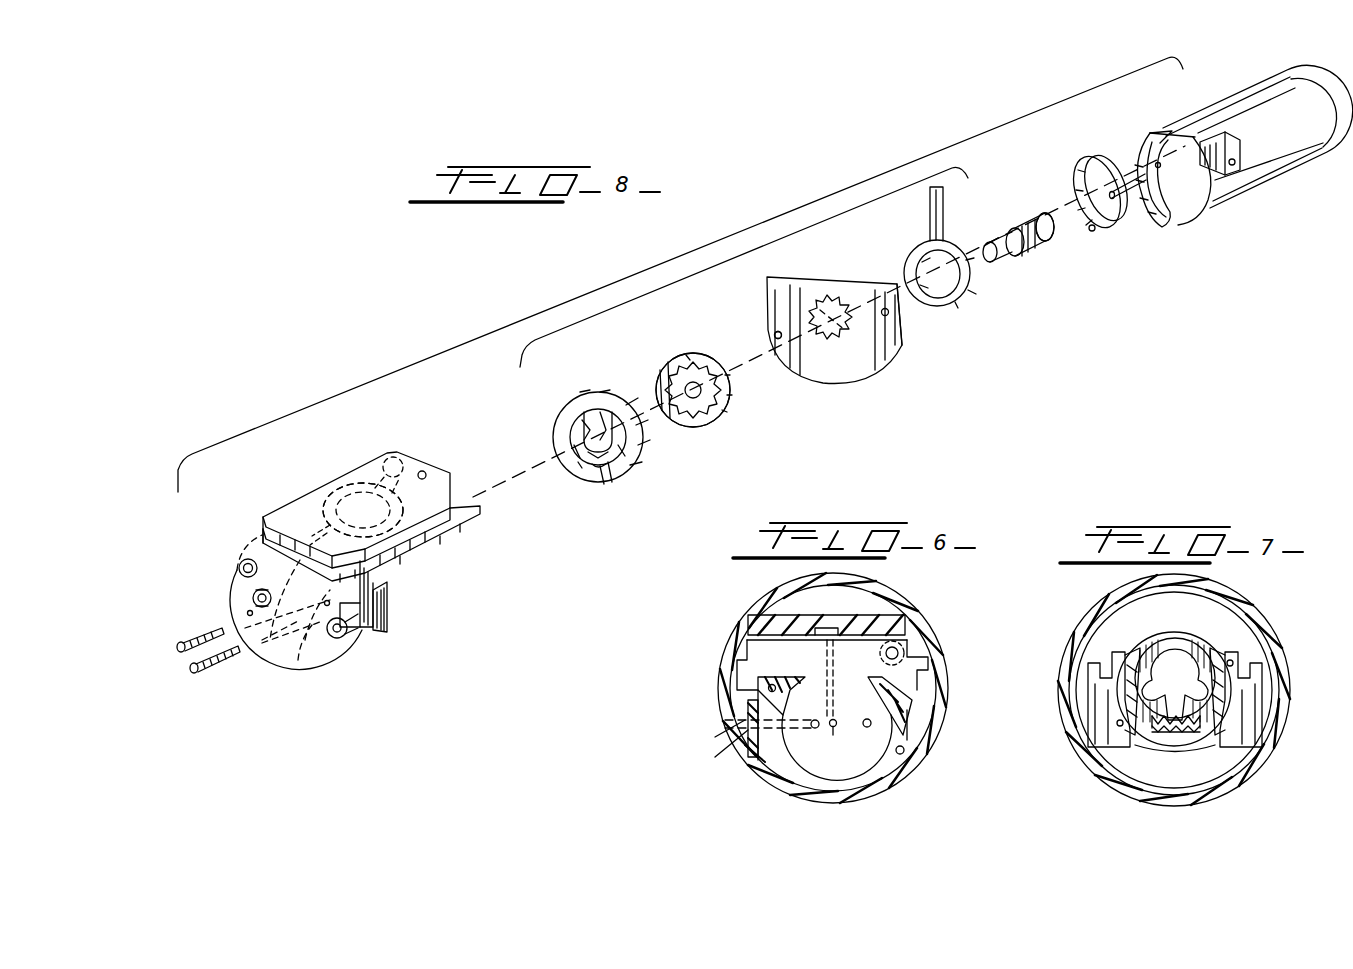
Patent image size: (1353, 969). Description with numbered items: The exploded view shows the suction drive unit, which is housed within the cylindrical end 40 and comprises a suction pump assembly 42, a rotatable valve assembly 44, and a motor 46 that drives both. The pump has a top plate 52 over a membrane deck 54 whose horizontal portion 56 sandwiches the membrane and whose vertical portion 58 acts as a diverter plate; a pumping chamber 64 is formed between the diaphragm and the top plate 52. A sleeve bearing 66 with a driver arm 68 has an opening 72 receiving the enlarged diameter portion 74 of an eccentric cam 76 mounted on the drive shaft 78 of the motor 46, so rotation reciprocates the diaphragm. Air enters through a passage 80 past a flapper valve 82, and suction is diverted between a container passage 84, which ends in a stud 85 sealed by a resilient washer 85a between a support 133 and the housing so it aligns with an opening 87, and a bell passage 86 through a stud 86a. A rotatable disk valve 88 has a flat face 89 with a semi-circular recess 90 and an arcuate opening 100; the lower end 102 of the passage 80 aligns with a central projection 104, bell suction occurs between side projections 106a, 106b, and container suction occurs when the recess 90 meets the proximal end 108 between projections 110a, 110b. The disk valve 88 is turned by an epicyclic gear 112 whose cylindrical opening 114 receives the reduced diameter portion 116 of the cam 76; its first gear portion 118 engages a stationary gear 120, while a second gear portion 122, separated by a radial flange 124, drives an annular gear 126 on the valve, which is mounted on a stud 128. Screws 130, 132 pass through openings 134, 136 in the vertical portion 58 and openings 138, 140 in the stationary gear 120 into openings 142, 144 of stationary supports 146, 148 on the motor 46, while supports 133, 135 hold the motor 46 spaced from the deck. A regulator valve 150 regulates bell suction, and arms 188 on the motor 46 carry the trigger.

In FIG. 6, the cylindrical end 40 is at (765, 583).
In FIG. 7, the cylindrical end 40 is at (1105, 585).
In FIG. 8, the suction pump assembly 42 is at (458, 548).
In FIG. 8, the rotatable valve assembly 44 is at (668, 292).
In FIG. 8, the motor 46 is at (1225, 100).
In FIG. 8, the top plate 52 is at (283, 516).
In FIG. 8, the membrane deck 54 is at (482, 513).
In FIG. 8, the horizontal portion 56 is at (402, 575).
In FIG. 8, the vertical portion 58 is at (307, 664).
In FIG. 8, the pumping chamber 64 is at (340, 492).
In FIG. 8, the sleeve bearing 66 is at (955, 300).
In FIG. 8, the driver arm 68 is at (928, 213).
In FIG. 8, the opening 72 is at (915, 270).
In FIG. 8, the enlarged diameter portion 74 is at (1040, 250).
In FIG. 8, the eccentric cam 76 is at (1030, 218).
In FIG. 8, the drive shaft 78 is at (1118, 188).
In FIG. 8, the passage 80 is at (238, 570).
In FIG. 6, the passage 80 is at (828, 660).
In FIG. 6, the flapper valve 82 is at (860, 625).
In FIG. 8, the passage 84 is at (298, 660).
In FIG. 6, the passage 84 is at (775, 765).
In FIG. 8, the stud 85 is at (340, 640).
In FIG. 6, the stud 85 is at (748, 725).
In FIG. 6, the washer 85a is at (755, 745).
In FIG. 8, the passage 86 is at (250, 598).
In FIG. 6, the passage 86 is at (867, 727).
In FIG. 8, the stud 86a is at (262, 640).
In FIG. 6, the opening 87 is at (745, 720).
In FIG. 8, the rotatable disk valve 88 is at (630, 465).
In FIG. 8, the flat face 89 is at (615, 478).
In FIG. 7, the flat face 89 is at (1160, 755).
In FIG. 8, the semi-circular recess 90 is at (590, 425).
In FIG. 7, the semi-circular recess 90 is at (1180, 655).
In FIG. 8, the arcuate opening 100 is at (600, 470).
In FIG. 7, the arcuate opening 100 is at (1190, 740).
In FIG. 6, the lower end 102 is at (833, 735).
In FIG. 8, the central projection 104 is at (587, 455).
In FIG. 7, the central projection 104 is at (1165, 740).
In FIG. 8, the side projection 106a is at (625, 453).
In FIG. 7, the side projection 106a is at (1230, 735).
In FIG. 8, the side projection 106b is at (578, 452).
In FIG. 7, the side projection 106b is at (1130, 730).
In FIG. 8, the proximal end 108 is at (272, 660).
In FIG. 6, the proximal end 108 is at (815, 728).
In FIG. 8, the side projection 110a is at (603, 420).
In FIG. 7, the side projection 110a is at (1195, 690).
In FIG. 8, the side projection 110b is at (577, 425).
In FIG. 7, the side projection 110b is at (1125, 670).
In FIG. 8, the epicyclic gear 112 is at (735, 405).
In FIG. 8, the cylindrical opening 114 is at (665, 378).
In FIG. 8, the reduced diameter portion 116 is at (1000, 262).
In FIG. 8, the first gear portion 118 is at (745, 376).
In FIG. 8, the stationary gear 120 is at (886, 368).
In FIG. 8, the second gear portion 122 is at (710, 410).
In FIG. 8, the radial flange 124 is at (688, 355).
In FIG. 8, the annular gear 126 is at (580, 465).
In FIG. 8, the stud 128 is at (988, 245).
In FIG. 8, the screw 130 is at (182, 638).
In FIG. 8, the screw 132 is at (195, 676).
In FIG. 8, the support 133 is at (385, 632).
In FIG. 6, the support 133 is at (760, 760).
In FIG. 7, the support 133 is at (1245, 695).
In FIG. 6, the opening 134 is at (770, 683).
In FIG. 6, the support 135 is at (920, 710).
In FIG. 7, the support 135 is at (1075, 665).
In FIG. 6, the opening 136 is at (905, 752).
In FIG. 8, the opening 138 is at (903, 345).
In FIG. 8, the opening 140 is at (778, 335).
In FIG. 8, the opening 142 is at (1150, 160).
In FIG. 8, the opening 144 is at (1092, 232).
In FIG. 8, the stationary support 146 is at (1170, 225).
In FIG. 8, the stationary support 148 is at (1080, 170).
In FIG. 6, the regulator valve 150 is at (910, 650).
In FIG. 8, the arms 188 is at (1245, 155).